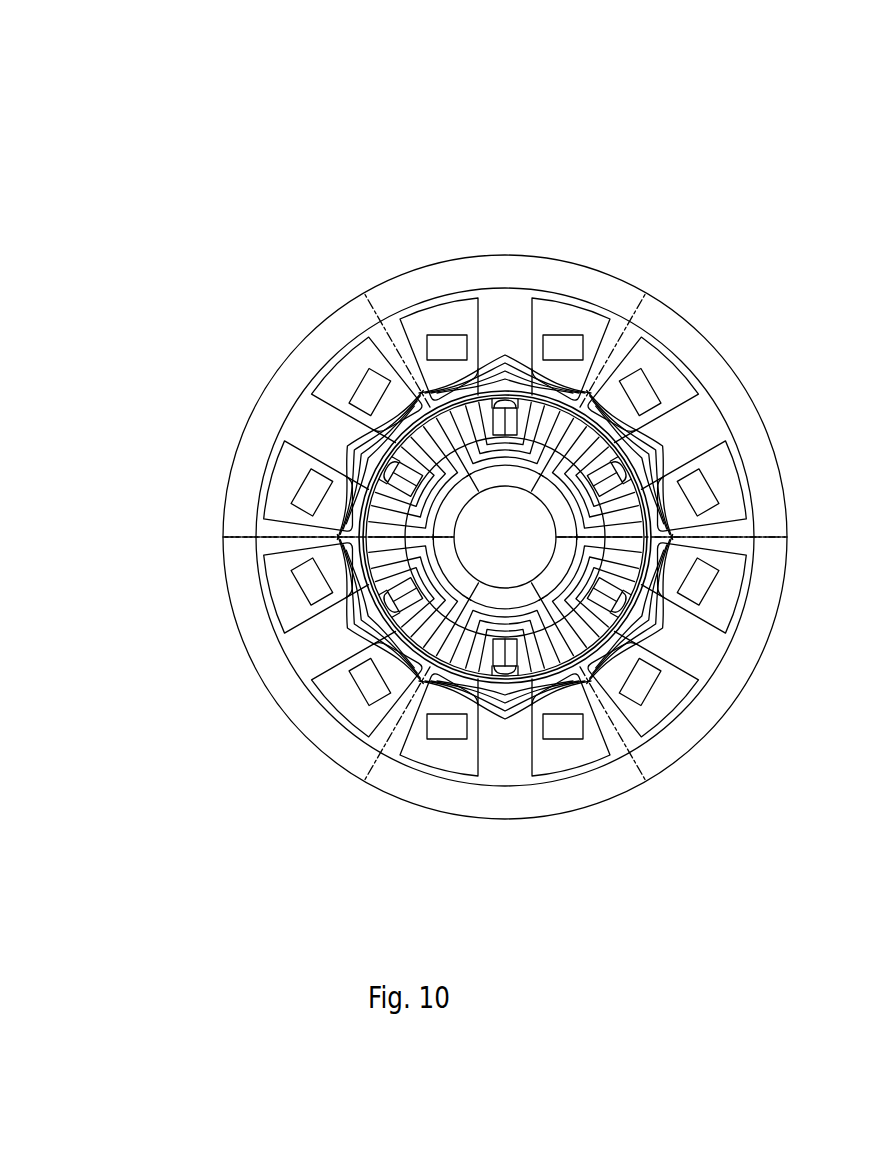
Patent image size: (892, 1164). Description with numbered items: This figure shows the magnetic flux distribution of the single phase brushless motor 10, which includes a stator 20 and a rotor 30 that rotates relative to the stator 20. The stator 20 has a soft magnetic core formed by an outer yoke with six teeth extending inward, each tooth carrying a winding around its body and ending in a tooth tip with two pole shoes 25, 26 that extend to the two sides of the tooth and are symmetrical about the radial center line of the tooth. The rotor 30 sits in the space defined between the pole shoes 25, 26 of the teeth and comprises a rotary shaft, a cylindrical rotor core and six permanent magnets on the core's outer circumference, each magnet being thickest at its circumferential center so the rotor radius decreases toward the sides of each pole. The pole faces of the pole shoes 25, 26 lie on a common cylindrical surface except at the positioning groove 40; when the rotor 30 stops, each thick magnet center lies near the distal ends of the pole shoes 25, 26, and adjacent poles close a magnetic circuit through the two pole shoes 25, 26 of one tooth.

The single phase brushless motor 10 is at (560, 52).
The stator 20 is at (218, 534).
The pole shoe 25 is at (393, 415).
The pole shoe 26 is at (360, 497).
The rotor 30 is at (509, 380).
The positioning groove 40 is at (358, 452).